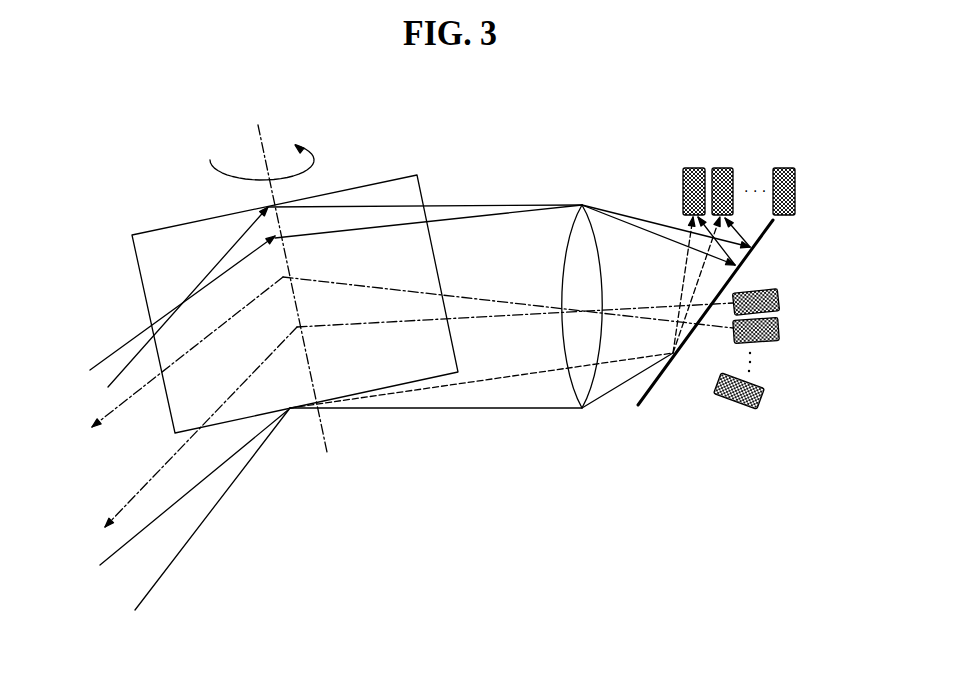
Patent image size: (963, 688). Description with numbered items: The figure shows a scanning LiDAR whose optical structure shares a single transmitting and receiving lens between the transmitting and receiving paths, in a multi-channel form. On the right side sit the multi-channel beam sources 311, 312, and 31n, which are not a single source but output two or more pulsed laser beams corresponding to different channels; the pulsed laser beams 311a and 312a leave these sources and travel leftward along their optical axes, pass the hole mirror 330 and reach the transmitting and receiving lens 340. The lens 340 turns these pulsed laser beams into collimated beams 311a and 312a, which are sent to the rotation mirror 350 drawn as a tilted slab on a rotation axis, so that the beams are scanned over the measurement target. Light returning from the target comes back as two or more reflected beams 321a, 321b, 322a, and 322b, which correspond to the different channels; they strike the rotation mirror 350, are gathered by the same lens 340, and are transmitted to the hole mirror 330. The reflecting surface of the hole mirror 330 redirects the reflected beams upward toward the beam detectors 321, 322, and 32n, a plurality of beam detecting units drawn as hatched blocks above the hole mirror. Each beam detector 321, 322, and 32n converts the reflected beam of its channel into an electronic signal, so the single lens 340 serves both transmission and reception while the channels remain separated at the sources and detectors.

The rotation mirror 350 is at (385, 184).
The transmitting and receiving lens 340 is at (587, 207).
The hole mirror 330 is at (652, 395).
The beam detector 321 is at (692, 166).
The beam detector 322 is at (725, 166).
The beam detector 32n is at (792, 166).
The beam source 311 is at (779, 298).
The beam source 312 is at (779, 334).
The beam source 31n is at (758, 400).
The pulsed laser beam 311a is at (508, 313).
The pulsed laser beam 312a is at (490, 290).
The reflected beam 321a is at (165, 570).
The reflected beam 321b is at (457, 203).
The reflected beam 322a is at (100, 565).
The reflected beam 322b is at (120, 349).